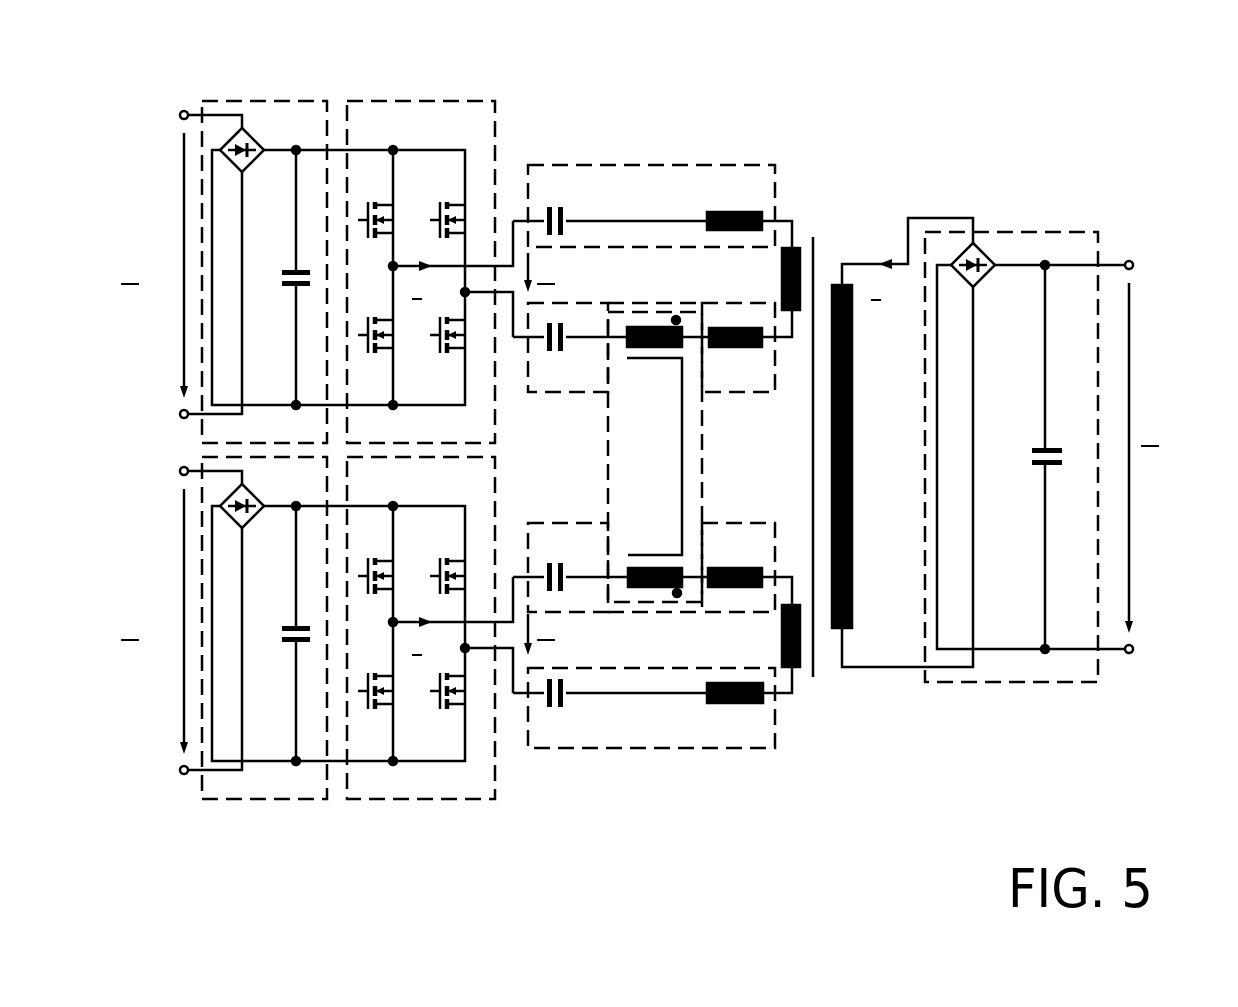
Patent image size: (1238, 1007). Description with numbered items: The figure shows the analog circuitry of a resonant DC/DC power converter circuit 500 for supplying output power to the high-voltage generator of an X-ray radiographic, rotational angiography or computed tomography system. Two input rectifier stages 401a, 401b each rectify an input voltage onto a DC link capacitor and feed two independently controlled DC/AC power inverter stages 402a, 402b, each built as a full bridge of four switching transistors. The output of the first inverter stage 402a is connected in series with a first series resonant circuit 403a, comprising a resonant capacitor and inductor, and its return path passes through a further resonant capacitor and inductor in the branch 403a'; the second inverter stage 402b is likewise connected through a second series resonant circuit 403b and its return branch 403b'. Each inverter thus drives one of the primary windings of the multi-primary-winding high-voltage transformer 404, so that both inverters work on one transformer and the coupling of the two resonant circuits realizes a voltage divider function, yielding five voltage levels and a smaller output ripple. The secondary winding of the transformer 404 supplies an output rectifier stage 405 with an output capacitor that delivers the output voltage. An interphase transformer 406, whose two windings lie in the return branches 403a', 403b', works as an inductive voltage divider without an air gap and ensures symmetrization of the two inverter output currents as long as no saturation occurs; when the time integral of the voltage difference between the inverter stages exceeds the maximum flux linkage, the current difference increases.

The resonant DC/DC power converter circuit 500 is at (972, 76).
The first input rectifier stage 401a is at (265, 100).
The second input rectifier stage 401b is at (263, 800).
The first DC/AC power inverter stage 402a is at (428, 100).
The second DC/AC power inverter stage 402b is at (428, 800).
The first series resonant circuit 403a is at (652, 195).
The first series resonant circuit return branch 403a' is at (652, 378).
The second series resonant circuit 403b is at (652, 560).
The second series resonant circuit return branch 403b' is at (652, 742).
The high-voltage transformer 404 is at (813, 237).
The output rectifier stage 405 is at (1053, 232).
The interphase transformer 406 is at (682, 457).